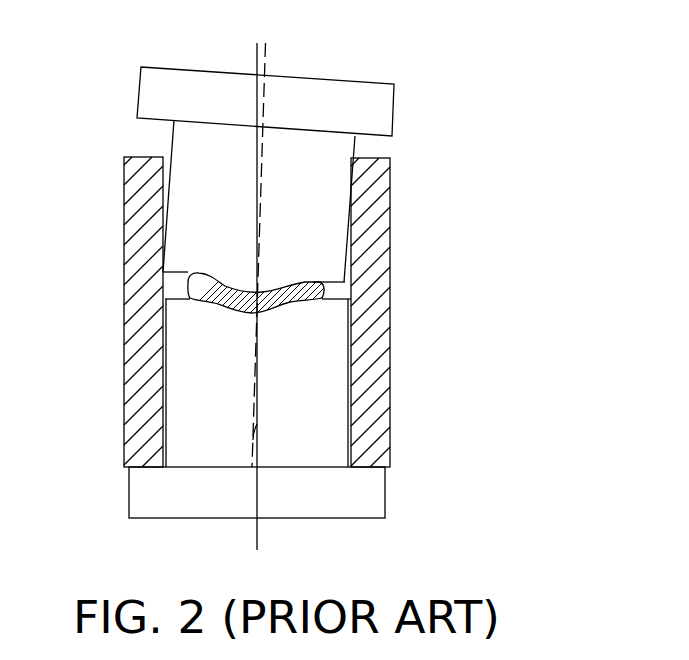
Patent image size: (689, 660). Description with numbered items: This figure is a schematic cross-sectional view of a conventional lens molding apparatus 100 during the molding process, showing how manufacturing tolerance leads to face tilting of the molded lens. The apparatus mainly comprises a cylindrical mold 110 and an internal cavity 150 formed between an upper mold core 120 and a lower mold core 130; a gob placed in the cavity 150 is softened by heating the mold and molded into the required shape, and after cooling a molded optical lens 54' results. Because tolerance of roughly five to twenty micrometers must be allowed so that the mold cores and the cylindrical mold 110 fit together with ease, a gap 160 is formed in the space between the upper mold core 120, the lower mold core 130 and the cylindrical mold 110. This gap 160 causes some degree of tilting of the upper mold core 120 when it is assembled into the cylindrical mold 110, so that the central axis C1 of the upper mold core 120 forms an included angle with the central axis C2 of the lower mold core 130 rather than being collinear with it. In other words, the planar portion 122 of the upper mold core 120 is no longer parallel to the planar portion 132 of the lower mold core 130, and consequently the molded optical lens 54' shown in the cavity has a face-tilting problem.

The lens molding apparatus 100 is at (598, 580).
The cylindrical mold 110 is at (375, 200).
The upper mold core 120 is at (362, 101).
The lower mold core 130 is at (372, 495).
The planar portion 122 is at (183, 272).
The planar portion 132 is at (183, 300).
The internal cavity 150 is at (337, 291).
The gap 160 is at (350, 275).
The molded optical lens 54' is at (344, 303).
The central axis C1 is at (266, 50).
The central axis C2 is at (258, 535).